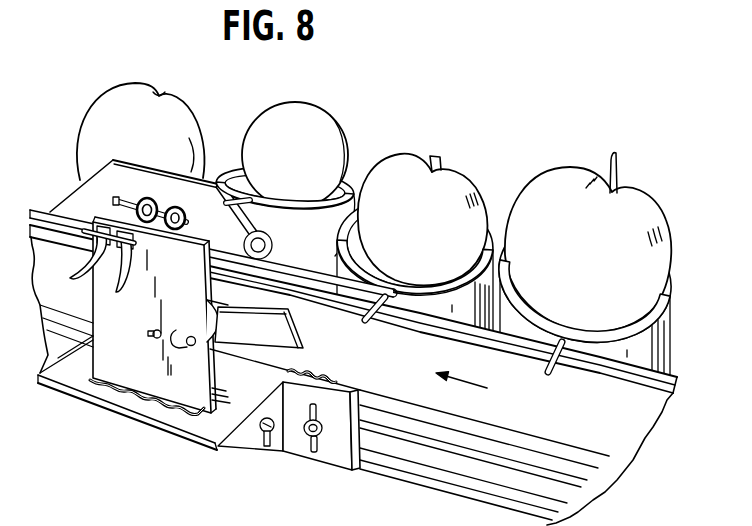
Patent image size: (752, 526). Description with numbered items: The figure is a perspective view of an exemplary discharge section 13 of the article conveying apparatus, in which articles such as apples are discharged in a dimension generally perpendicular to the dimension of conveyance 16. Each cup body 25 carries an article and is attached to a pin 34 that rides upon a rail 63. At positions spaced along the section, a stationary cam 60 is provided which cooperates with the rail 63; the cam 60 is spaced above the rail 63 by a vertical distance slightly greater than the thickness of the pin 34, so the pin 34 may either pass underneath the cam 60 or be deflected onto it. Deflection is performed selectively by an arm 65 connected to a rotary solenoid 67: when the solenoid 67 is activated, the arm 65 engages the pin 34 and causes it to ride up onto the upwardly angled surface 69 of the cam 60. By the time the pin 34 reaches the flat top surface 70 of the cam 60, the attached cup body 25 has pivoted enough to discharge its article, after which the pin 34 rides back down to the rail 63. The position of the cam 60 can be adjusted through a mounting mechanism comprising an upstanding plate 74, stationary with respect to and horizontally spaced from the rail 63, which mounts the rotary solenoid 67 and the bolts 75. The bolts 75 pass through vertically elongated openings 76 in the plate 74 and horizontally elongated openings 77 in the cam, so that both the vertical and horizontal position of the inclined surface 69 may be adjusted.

The discharge section 13 is at (443, 100).
The dimension of conveyance 16 is at (467, 385).
The cup body 25 is at (232, 170).
The pin 34 is at (224, 206).
The stationary cam 60 is at (87, 205).
The rail 63 is at (676, 376).
The arm 65 is at (290, 338).
The rotary solenoid 67 is at (226, 329).
The upwardly angled surface 69 is at (207, 281).
The flat top surface 70 is at (175, 170).
The upstanding plate 74 is at (132, 365).
The bolts 75 is at (80, 273).
The vertically elongated openings 76 is at (109, 273).
The horizontally elongated openings 77 is at (123, 210).